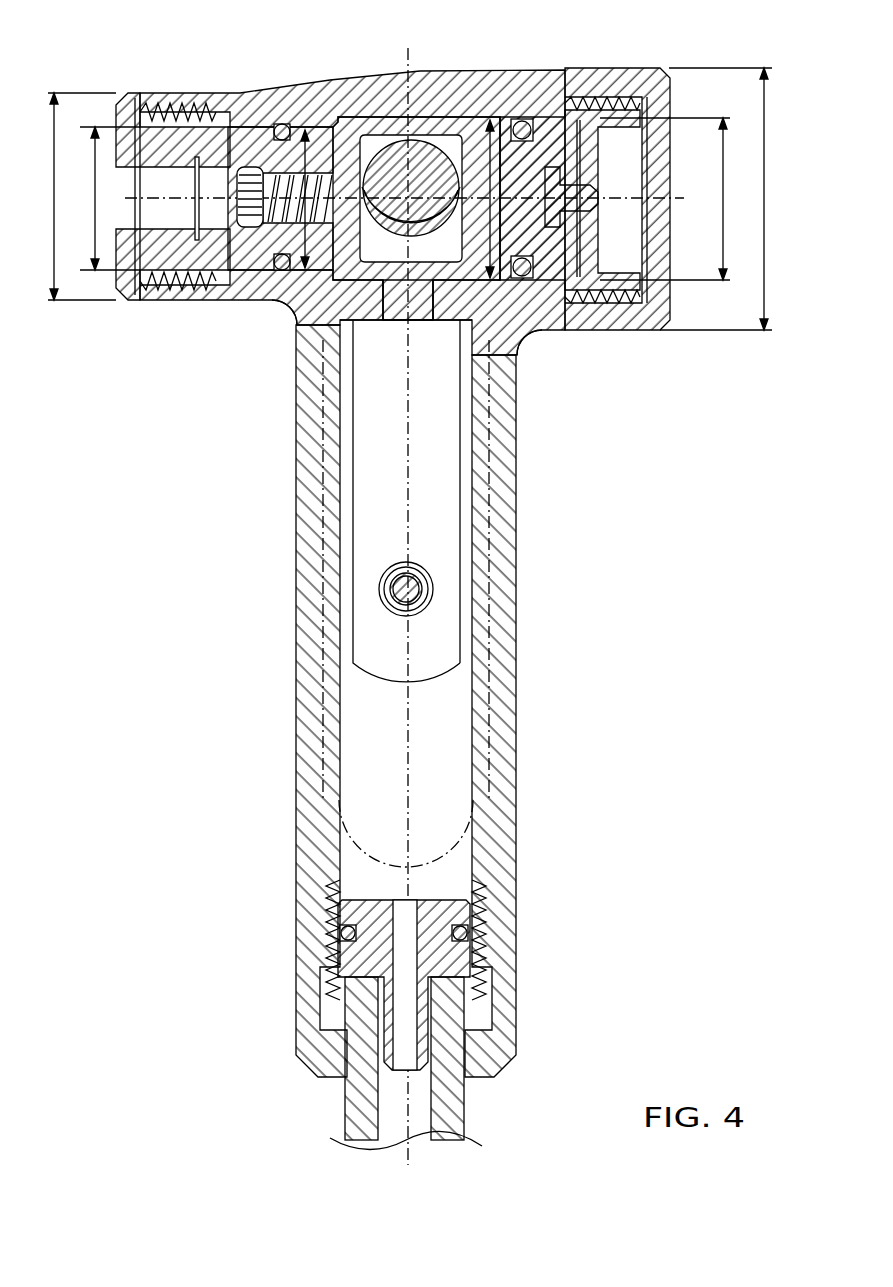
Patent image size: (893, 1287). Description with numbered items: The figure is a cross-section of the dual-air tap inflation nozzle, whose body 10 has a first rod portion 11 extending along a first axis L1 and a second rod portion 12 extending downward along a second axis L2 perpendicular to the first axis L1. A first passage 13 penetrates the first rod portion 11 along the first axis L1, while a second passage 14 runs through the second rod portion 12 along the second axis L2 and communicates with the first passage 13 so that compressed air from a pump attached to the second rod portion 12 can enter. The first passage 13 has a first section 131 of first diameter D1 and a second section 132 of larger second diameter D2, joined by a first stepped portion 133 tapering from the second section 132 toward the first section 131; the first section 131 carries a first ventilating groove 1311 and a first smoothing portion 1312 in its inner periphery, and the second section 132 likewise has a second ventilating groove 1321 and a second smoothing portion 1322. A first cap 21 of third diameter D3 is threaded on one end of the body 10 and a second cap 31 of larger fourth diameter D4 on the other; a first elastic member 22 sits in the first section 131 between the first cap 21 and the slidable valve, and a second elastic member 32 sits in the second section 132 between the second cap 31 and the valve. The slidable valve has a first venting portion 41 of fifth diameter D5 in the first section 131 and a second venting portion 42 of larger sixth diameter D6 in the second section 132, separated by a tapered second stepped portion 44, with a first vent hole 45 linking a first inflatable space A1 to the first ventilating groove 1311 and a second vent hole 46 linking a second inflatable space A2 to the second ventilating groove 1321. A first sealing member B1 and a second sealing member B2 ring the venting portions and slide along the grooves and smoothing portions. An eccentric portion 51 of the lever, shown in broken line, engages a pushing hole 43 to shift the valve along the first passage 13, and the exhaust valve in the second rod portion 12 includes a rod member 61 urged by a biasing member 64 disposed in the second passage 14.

The body 10 is at (178, 490).
The first rod portion 11 is at (375, 95).
The second rod portion 12 is at (500, 644).
The first passage 13 is at (335, 108).
The second passage 14 is at (455, 748).
The first cap 21 is at (140, 108).
The first elastic member 22 is at (175, 110).
The second cap 31 is at (655, 88).
The second elastic member 32 is at (615, 104).
The first venting portion 41 is at (278, 147).
The second venting portion 42 is at (570, 154).
The pushing hole 43 is at (462, 450).
The second stepped portion 44 is at (350, 448).
The first vent hole 45 is at (250, 172).
The second vent hole 46 is at (575, 178).
The eccentric portion 51 is at (425, 160).
The rod member 61 is at (420, 580).
The biasing member 64 is at (426, 592).
The first section 131 is at (199, 344).
The first ventilating groove 1311 is at (233, 320).
The first smoothing portion 1312 is at (277, 320).
The second section 132 is at (602, 369).
The second ventilating groove 1321 is at (548, 300).
The second smoothing portion 1322 is at (522, 350).
The first stepped portion 133 is at (345, 330).
The first diameter D1 is at (305, 128).
The second diameter D2 is at (490, 118).
The third diameter D3 is at (66, 196).
The fourth diameter D4 is at (716, 199).
The fifth diameter D5 is at (100, 198).
The sixth diameter D6 is at (665, 199).
The first axis L1 is at (150, 290).
The second axis L2 is at (412, 60).
The first inflatable space A1 is at (185, 255).
The second inflatable space A2 is at (622, 235).
The first sealing member B1 is at (282, 123).
The second sealing member B2 is at (522, 119).